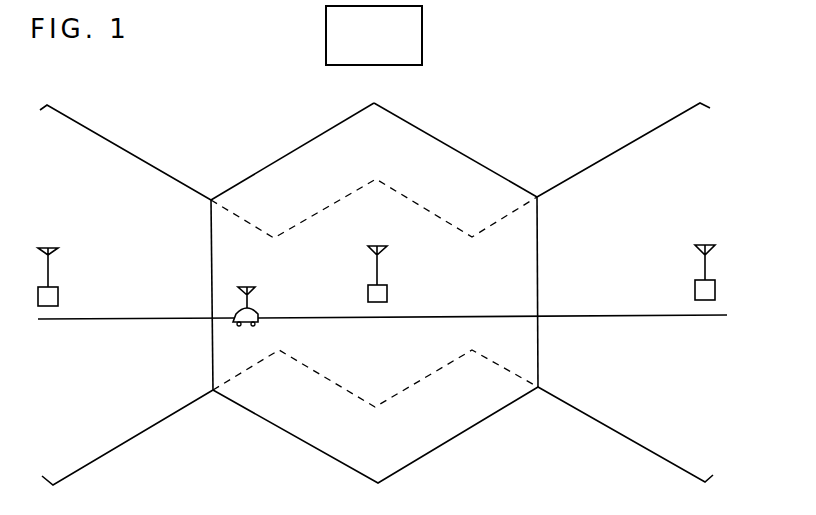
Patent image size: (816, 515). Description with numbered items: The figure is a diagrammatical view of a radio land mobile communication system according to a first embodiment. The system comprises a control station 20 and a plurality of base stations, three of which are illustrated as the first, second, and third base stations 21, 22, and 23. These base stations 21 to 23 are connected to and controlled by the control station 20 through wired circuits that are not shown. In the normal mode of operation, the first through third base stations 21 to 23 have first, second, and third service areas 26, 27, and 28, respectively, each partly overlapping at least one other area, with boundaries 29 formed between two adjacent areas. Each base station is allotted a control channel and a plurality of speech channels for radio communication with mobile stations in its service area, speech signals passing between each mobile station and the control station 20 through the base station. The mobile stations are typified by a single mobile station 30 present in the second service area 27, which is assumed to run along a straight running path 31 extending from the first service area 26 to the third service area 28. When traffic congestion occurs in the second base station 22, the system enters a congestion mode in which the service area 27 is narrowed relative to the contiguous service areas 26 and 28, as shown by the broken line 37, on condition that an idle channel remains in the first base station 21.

The control station 20 is at (422, 42).
The first base station 21 is at (58, 290).
The second base station 22 is at (387, 288).
The third base station 23 is at (695, 288).
The first service area 26 is at (95, 133).
The second service area 27 is at (445, 144).
The third service area 28 is at (656, 126).
The boundaries 29 is at (211, 244).
The mobile station 30 is at (241, 327).
The running path 31 is at (107, 319).
The broken line 37 is at (333, 382).